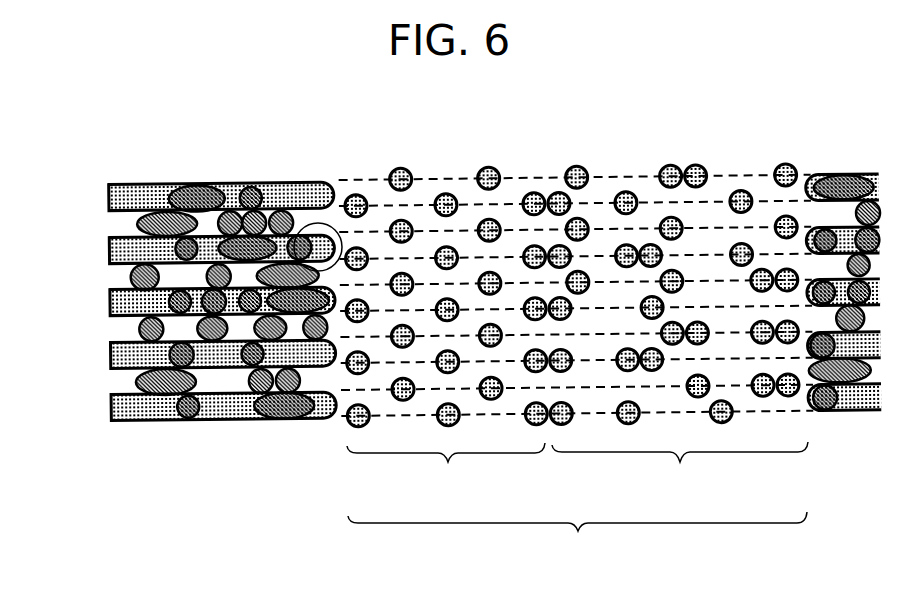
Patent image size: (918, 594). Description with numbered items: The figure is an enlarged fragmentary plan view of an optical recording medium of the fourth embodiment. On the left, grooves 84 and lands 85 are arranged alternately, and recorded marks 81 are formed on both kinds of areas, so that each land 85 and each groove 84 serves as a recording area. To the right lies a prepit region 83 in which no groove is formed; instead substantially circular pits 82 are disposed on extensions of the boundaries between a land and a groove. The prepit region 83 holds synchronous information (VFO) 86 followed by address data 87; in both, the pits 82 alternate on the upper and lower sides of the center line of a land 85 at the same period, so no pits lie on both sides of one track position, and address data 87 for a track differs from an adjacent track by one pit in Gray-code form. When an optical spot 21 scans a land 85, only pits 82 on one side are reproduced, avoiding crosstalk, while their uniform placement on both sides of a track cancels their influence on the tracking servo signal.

The optical spot 21 is at (327, 223).
The recorded marks 81 is at (210, 182).
The substantially circular pits 82 is at (402, 178).
The prepit region 83 is at (577, 542).
The grooves 84 is at (454, 267).
The lands 85 is at (110, 223).
The synchronous information (VFO) 86 is at (446, 472).
The address data 87 is at (680, 470).